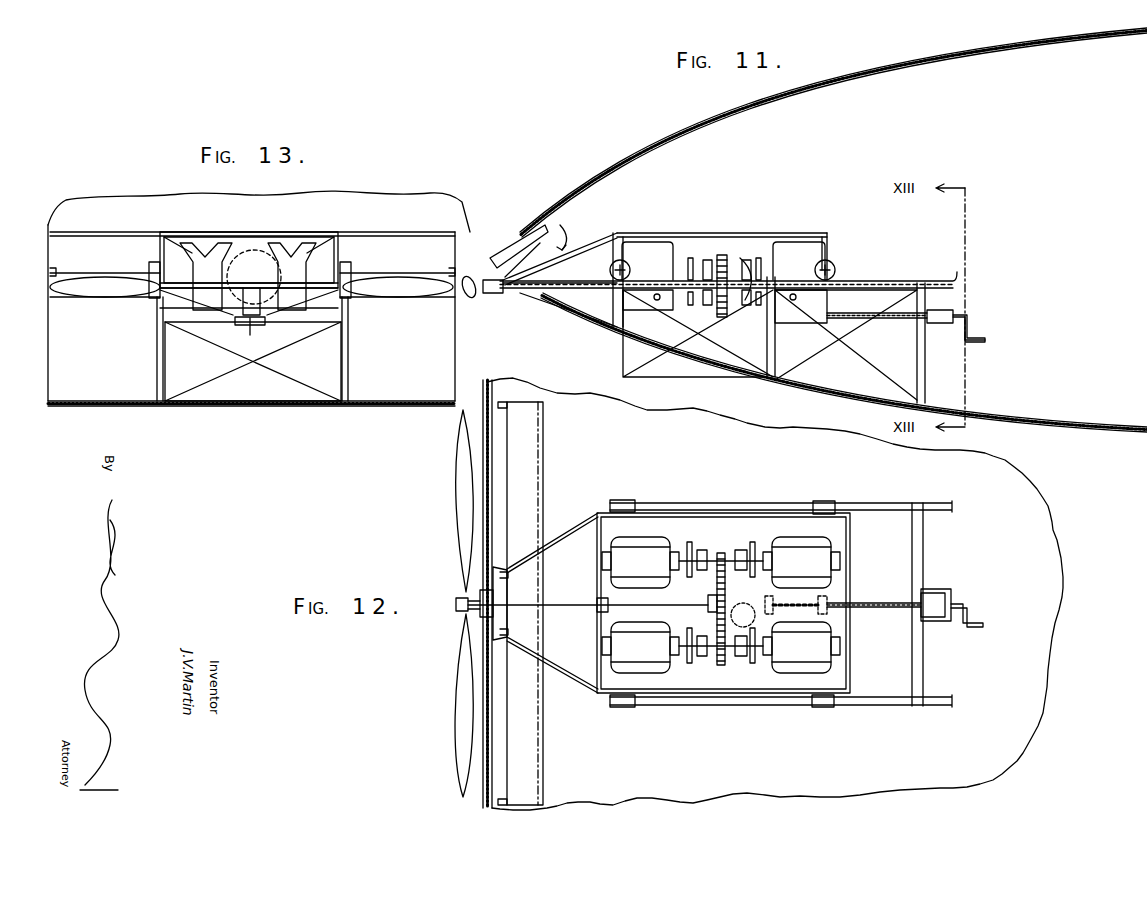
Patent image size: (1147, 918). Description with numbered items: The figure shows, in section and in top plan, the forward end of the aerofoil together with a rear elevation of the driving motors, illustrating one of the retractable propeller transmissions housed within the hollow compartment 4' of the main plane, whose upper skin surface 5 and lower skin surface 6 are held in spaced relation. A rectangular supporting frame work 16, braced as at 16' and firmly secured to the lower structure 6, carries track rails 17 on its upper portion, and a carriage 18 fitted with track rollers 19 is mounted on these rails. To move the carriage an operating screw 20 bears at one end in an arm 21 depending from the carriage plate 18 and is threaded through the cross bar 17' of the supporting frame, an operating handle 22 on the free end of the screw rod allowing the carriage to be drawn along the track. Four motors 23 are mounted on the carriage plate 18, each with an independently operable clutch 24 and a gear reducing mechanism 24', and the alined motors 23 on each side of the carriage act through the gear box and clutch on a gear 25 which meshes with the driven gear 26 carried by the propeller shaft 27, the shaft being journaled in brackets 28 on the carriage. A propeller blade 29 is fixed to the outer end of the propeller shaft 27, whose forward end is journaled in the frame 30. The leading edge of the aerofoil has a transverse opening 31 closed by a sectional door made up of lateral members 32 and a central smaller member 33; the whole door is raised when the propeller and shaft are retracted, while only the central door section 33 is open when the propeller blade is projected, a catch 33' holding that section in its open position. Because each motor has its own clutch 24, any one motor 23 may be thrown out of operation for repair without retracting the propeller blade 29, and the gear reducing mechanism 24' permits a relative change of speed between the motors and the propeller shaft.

In FIG. 11, the compartment 4' is at (1076, 237).
In FIG. 11, the upper skin surface 5 is at (900, 60).
In FIG. 13, the lower skin surface 6 is at (250, 384).
In FIG. 11, the lower skin surface 6 is at (1080, 425).
In FIG. 11, the supporting frame work 16 is at (728, 318).
In FIG. 11, the bracing 16' is at (846, 345).
In FIG. 13, the track rails 17 is at (230, 345).
In FIG. 11, the track rails 17 is at (728, 270).
In FIG. 12, the track rails 17 is at (774, 606).
In FIG. 12, the cross bar 17' is at (937, 604).
In FIG. 12, the carriage 18 is at (752, 550).
In FIG. 13, the track rollers 19 is at (152, 270).
In FIG. 11, the track rollers 19 is at (838, 270).
In FIG. 12, the track rollers 19 is at (618, 500).
In FIG. 11, the operating screw 20 is at (902, 318).
In FIG. 12, the operating screw 20 is at (880, 603).
In FIG. 13, the arm 21 is at (238, 318).
In FIG. 11, the arm 21 is at (940, 312).
In FIG. 12, the arm 21 is at (949, 590).
In FIG. 13, the operating handle 22 is at (252, 333).
In FIG. 11, the operating handle 22 is at (977, 337).
In FIG. 12, the operating handle 22 is at (976, 622).
In FIG. 13, the motors 23 is at (205, 256).
In FIG. 11, the motors 23 is at (724, 282).
In FIG. 12, the motors 23 is at (721, 605).
In FIG. 11, the clutch 24 is at (721, 277).
In FIG. 12, the clutch 24 is at (721, 584).
In FIG. 11, the gear reducing mechanism 24' is at (708, 298).
In FIG. 12, the gear reducing mechanism 24' is at (715, 606).
In FIG. 12, the gear 25 is at (716, 680).
In FIG. 11, the driven gear 26 is at (730, 310).
In FIG. 12, the driven gear 26 is at (725, 584).
In FIG. 11, the propeller shaft 27 is at (566, 280).
In FIG. 12, the propeller shaft 27 is at (685, 606).
In FIG. 12, the brackets 28 is at (597, 602).
In FIG. 13, the propeller blade 29 is at (388, 298).
In FIG. 11, the propeller blade 29 is at (474, 275).
In FIG. 12, the propeller blade 29 is at (458, 582).
In FIG. 11, the frame 30 is at (492, 294).
In FIG. 13, the transverse opening 31 is at (70, 298).
In FIG. 13, the lateral members 32 is at (252, 264).
In FIG. 12, the lateral members 32 is at (538, 470).
In FIG. 13, the central smaller member 33 is at (249, 261).
In FIG. 12, the central smaller member 33 is at (506, 603).
In FIG. 11, the catch 33' is at (528, 248).